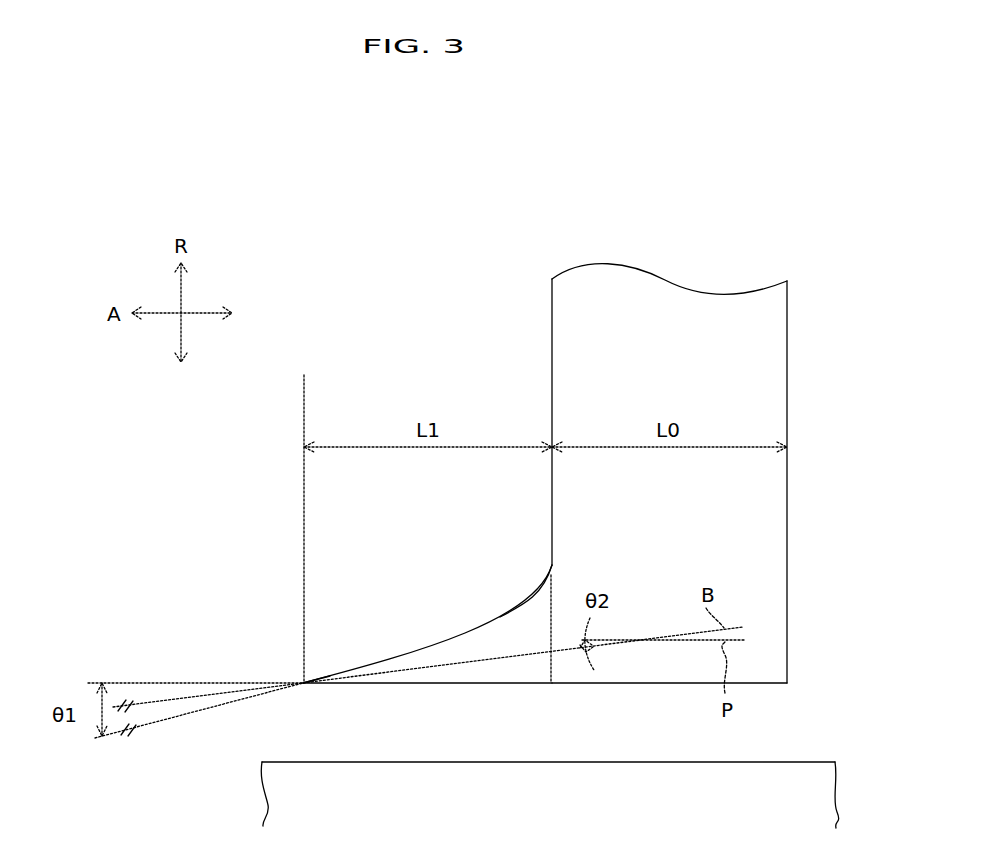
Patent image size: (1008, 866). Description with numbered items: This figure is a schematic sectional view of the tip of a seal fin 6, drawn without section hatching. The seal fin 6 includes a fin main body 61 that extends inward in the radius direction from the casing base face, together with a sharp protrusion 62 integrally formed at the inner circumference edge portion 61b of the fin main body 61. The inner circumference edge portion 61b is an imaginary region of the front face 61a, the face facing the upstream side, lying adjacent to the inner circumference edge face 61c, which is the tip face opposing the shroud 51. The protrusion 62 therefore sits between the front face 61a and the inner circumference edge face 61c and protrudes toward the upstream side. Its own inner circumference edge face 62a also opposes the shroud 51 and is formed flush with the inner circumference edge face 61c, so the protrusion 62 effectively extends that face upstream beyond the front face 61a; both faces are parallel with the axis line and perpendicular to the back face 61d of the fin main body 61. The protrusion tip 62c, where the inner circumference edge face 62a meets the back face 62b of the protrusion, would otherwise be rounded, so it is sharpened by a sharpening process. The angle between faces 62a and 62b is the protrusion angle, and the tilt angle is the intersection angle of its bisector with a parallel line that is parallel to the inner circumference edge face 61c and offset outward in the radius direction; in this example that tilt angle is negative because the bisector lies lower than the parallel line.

The seal fin 6 is at (808, 338).
The fin main body 61 is at (758, 538).
The front face 61a is at (552, 363).
The inner circumference edge portion 61b is at (548, 612).
The inner circumference edge face 61c is at (668, 685).
The back face 61d is at (788, 481).
The sharp protrusion 62 is at (449, 647).
The inner circumference edge face 62a is at (430, 685).
The back face 62b is at (372, 667).
The protrusion tip 62c is at (303, 687).
The shroud 51 is at (803, 762).